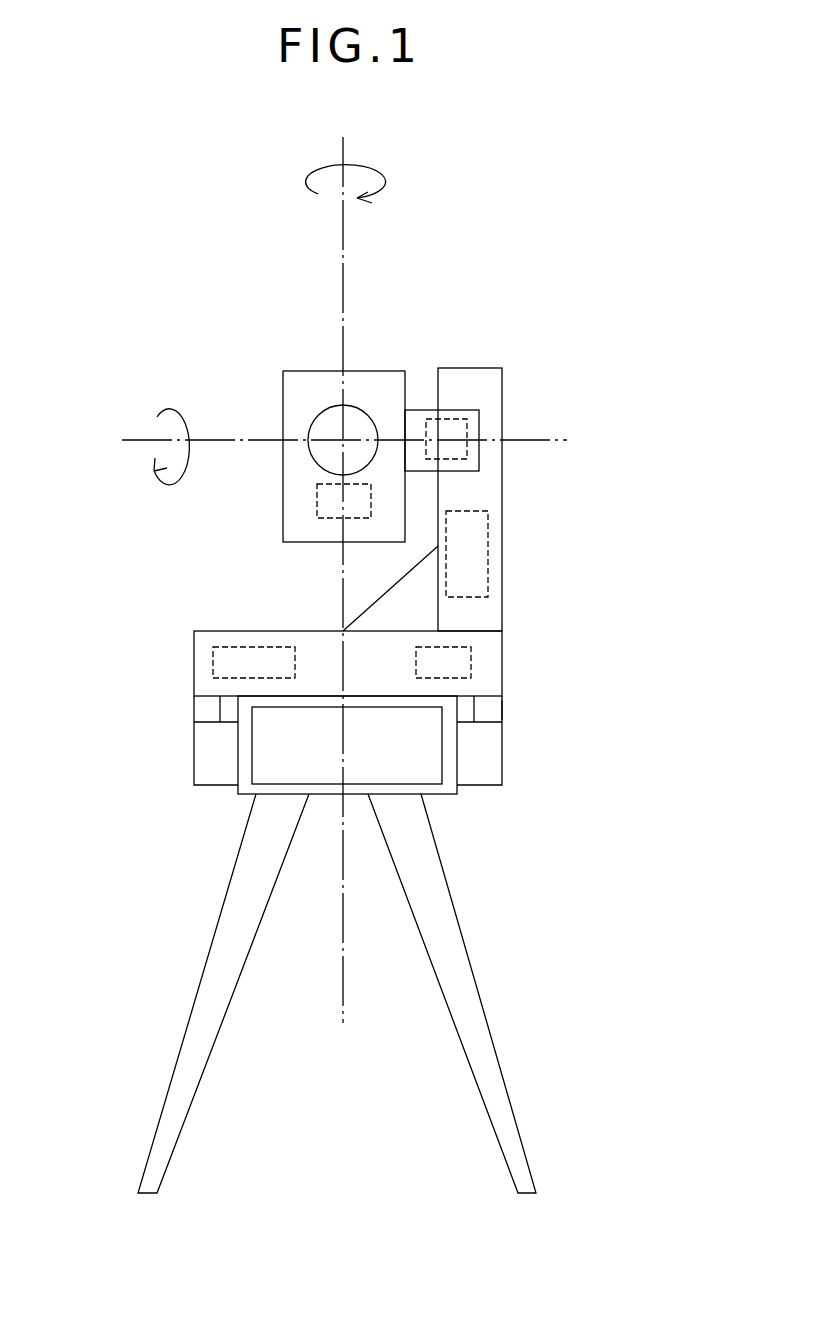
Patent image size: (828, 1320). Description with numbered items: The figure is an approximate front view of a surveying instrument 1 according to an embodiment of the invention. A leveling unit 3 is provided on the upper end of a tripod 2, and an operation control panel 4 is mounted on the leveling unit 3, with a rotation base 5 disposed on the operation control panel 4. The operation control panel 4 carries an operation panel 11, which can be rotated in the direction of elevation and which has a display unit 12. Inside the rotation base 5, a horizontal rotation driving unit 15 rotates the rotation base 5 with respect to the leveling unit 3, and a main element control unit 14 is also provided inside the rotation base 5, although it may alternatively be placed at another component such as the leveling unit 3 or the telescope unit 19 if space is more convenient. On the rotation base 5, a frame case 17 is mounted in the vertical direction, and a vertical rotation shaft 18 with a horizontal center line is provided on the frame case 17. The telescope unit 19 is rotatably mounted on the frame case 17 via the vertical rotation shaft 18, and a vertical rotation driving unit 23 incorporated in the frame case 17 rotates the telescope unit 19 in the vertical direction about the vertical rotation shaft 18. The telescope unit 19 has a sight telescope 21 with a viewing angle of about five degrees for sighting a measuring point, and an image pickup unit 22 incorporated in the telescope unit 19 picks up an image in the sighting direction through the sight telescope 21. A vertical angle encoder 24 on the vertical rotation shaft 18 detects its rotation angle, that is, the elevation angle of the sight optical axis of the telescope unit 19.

The surveying instrument 1 is at (344, 580).
The tripod 2 is at (463, 942).
The leveling unit 3 is at (502, 750).
The operation control panel 4 is at (502, 710).
The rotation base 5 is at (503, 642).
The operation panel 11 is at (457, 794).
The display unit 12 is at (285, 768).
The main element control unit 14 is at (213, 667).
The horizontal rotation driving unit 15 is at (471, 660).
The frame case 17 is at (503, 470).
The vertical rotation shaft 18 is at (413, 410).
The telescope unit 19 is at (283, 490).
The sight telescope 21 is at (323, 408).
The image pickup unit 22 is at (317, 500).
The vertical rotation driving unit 23 is at (488, 547).
The vertical angle encoder 24 is at (467, 432).